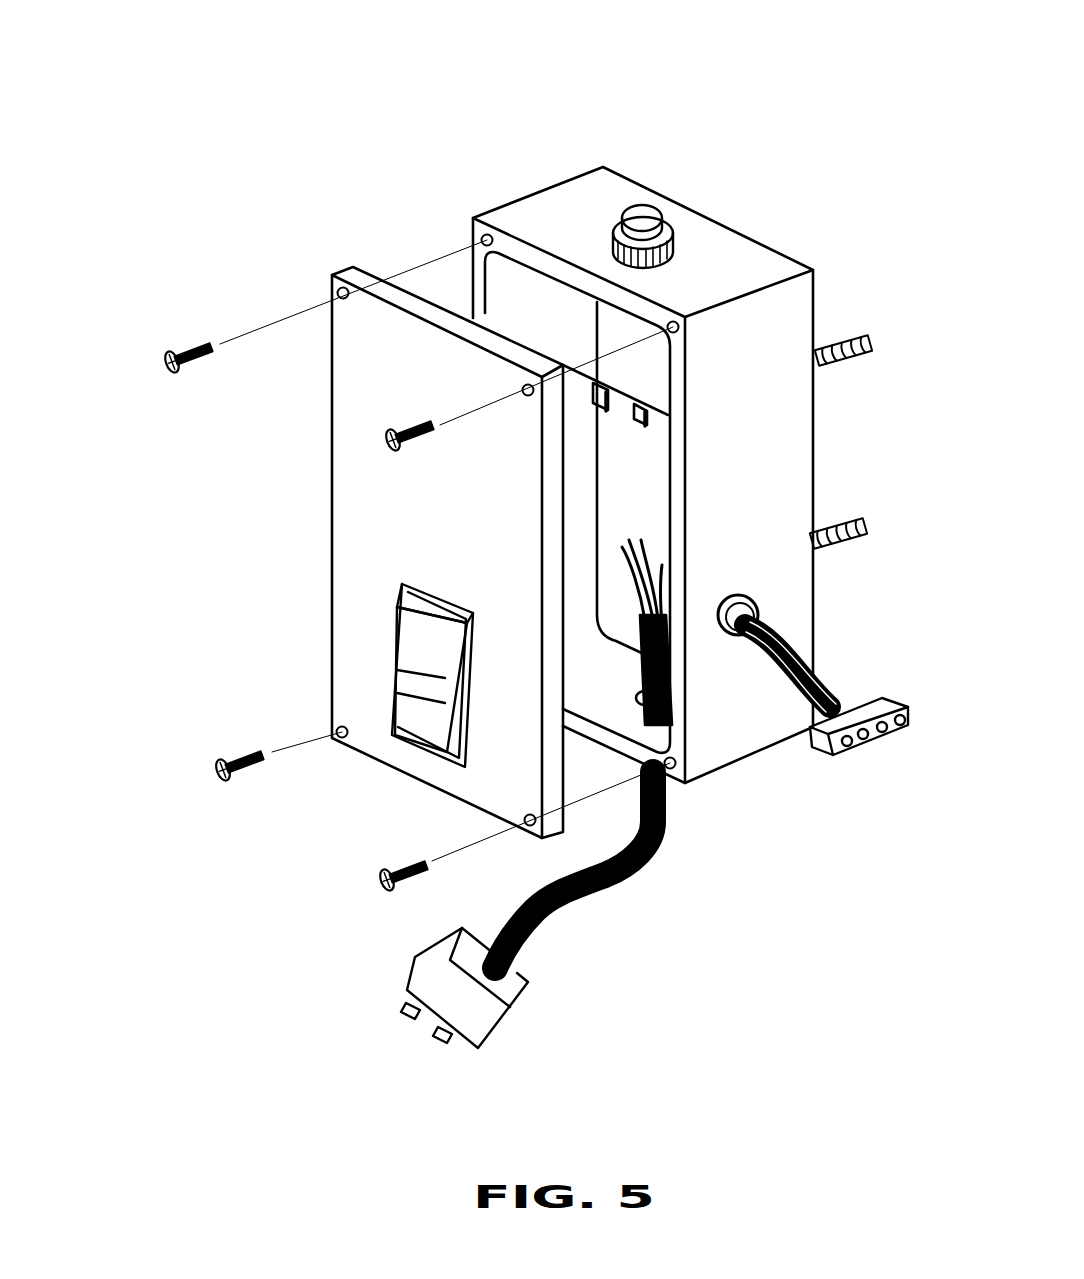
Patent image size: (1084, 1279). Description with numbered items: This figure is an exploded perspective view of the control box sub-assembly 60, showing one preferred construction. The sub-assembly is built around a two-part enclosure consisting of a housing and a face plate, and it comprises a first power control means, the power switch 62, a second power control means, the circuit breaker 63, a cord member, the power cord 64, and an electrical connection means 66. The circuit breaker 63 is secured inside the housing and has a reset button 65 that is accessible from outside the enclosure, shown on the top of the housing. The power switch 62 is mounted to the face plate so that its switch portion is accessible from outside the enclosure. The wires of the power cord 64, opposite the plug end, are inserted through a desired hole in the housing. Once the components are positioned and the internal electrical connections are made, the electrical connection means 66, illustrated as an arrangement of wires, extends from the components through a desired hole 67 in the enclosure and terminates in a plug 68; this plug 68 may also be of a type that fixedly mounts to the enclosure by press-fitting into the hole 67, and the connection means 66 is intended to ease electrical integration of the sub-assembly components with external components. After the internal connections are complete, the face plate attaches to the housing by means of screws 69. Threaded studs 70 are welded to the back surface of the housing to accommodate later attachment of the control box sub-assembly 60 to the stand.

The control box sub-assembly 60 is at (278, 128).
The power switch 62 is at (428, 647).
The circuit breaker 63 is at (643, 370).
The power cord 64 is at (592, 893).
The reset button 65 is at (656, 222).
The electrical connection means 66 is at (777, 677).
The hole 67 is at (752, 598).
The plug 68 is at (880, 737).
The screws 69 is at (163, 355).
The threaded studs 70 is at (868, 333).